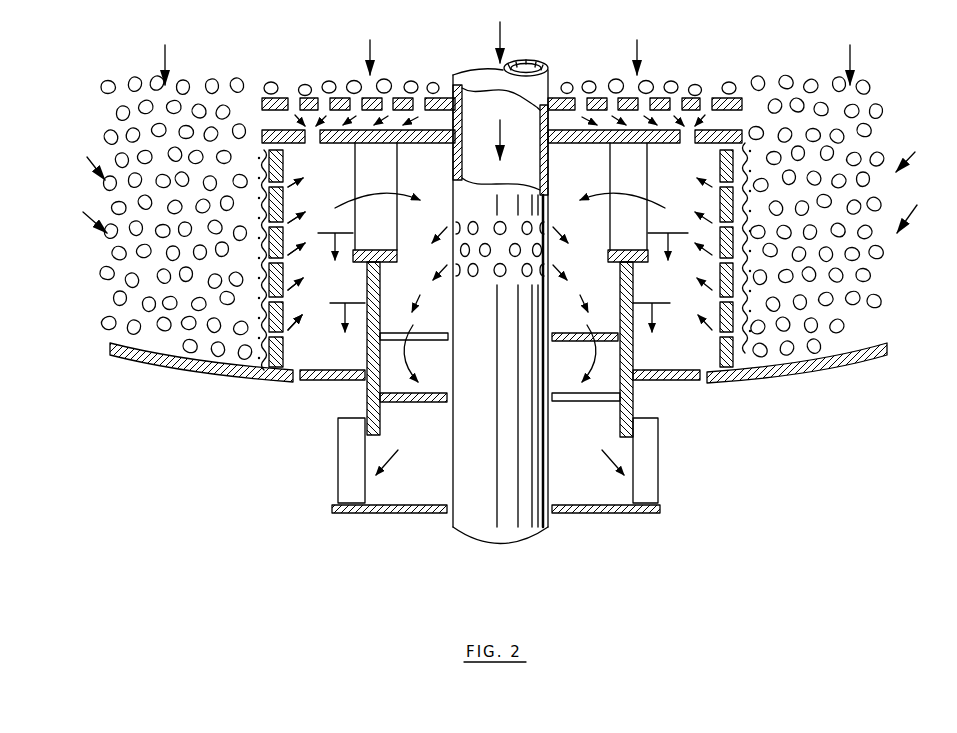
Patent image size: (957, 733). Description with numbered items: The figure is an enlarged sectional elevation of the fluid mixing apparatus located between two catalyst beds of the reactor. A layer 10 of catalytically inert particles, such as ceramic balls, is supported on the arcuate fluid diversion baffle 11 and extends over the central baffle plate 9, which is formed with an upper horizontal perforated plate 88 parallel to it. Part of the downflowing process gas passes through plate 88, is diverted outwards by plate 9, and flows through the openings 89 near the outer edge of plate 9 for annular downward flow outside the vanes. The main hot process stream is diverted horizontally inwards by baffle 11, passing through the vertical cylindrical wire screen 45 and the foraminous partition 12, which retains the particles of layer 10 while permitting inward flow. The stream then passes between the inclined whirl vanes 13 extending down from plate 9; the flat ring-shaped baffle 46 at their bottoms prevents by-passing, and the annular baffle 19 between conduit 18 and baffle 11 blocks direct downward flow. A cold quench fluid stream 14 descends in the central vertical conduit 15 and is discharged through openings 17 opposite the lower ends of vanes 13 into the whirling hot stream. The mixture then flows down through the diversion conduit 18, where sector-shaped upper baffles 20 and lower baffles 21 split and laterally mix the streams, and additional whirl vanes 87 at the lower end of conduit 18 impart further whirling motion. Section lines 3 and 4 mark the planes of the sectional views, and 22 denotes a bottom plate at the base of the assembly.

The section line 3- 3 is at (500, 248).
The section line 4- 4 is at (496, 318).
The circular horizontal central baffle plate 9 is at (264, 120).
The layer of catalytically inert particles 10 is at (107, 270).
The fluid diversion baffle 11 is at (160, 372).
The vertical cylindrical foraminous partition 12 is at (284, 172).
The whirl vanes 13 is at (398, 170).
The cold quench fluid stream 14 is at (504, 38).
The central vertical conduit 15 is at (546, 66).
The openings 17 is at (497, 278).
The vertical cylindrical diversion conduit 18 is at (381, 285).
The horizontal annular baffle 19 is at (318, 382).
The upper baffle 20 is at (418, 341).
The lower baffle 21 is at (405, 403).
The bottom plate 22 is at (365, 514).
The vertical cylindrical wire screen 45 is at (256, 340).
The flat horizontal ring-shaped baffle 46 is at (398, 252).
The additional vertical whirl vanes 87 is at (337, 455).
The upper horizontal perforated plate 88 is at (299, 91).
The openings in lower baffle plate 89 is at (315, 144).